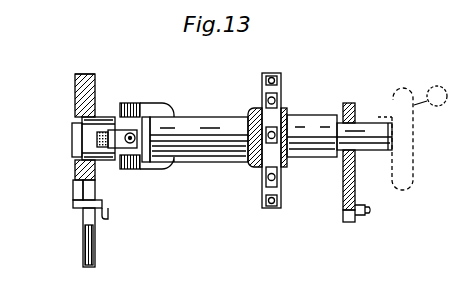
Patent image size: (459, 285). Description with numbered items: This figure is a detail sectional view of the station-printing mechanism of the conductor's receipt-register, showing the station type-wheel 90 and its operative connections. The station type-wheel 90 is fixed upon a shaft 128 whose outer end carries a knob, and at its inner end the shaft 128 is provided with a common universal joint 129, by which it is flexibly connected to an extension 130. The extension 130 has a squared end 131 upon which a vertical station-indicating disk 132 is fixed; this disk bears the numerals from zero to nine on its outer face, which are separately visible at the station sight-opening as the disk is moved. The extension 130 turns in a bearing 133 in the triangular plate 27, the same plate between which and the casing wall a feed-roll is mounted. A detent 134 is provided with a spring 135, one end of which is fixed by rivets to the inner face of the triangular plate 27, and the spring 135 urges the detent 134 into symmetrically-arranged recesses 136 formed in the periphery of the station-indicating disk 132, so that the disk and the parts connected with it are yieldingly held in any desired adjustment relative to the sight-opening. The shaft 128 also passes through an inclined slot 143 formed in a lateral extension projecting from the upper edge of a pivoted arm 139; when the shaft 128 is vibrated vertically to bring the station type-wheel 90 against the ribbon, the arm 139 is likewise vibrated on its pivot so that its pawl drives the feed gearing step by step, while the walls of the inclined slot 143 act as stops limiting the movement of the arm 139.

The triangular plate 27 is at (91, 73).
The station type-wheel 90 is at (277, 78).
The shaft 128 is at (308, 123).
The universal joint 129 is at (132, 134).
The extension 130 is at (84, 149).
The squared end 131 is at (71, 140).
The station-indicating disk 132 is at (74, 94).
The bearing 133 is at (97, 118).
The detent 134 is at (79, 208).
The spring 135 is at (103, 205).
The recesses 136 is at (75, 183).
The arm 139 is at (357, 190).
The inclined slot 143 is at (357, 122).